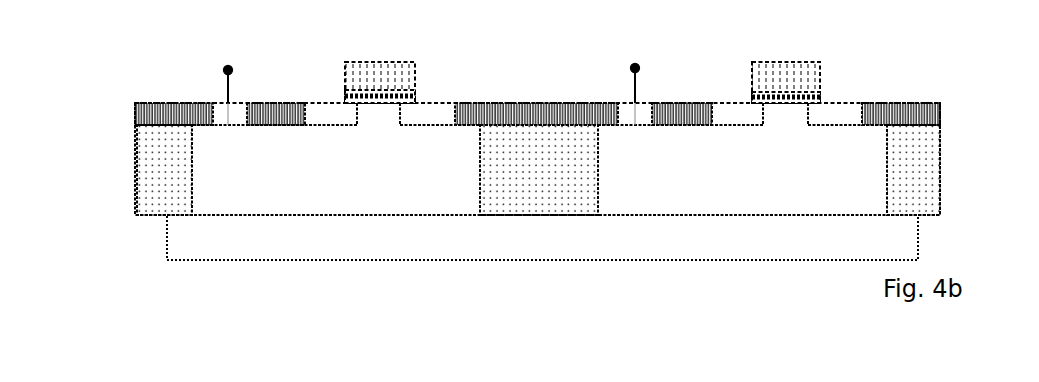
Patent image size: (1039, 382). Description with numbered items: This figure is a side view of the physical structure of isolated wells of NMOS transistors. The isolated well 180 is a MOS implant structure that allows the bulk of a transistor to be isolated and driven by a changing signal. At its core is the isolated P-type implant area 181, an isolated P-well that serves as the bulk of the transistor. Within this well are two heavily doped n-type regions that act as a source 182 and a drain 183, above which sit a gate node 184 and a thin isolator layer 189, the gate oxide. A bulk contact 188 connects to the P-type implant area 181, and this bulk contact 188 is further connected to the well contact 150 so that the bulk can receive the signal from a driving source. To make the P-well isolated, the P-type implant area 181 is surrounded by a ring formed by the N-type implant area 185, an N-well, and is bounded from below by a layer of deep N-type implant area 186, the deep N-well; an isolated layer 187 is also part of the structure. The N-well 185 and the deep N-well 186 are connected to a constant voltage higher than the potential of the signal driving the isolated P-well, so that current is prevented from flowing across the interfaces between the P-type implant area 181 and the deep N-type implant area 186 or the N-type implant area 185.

The well contact 150 is at (228, 70).
The isolated well 180 is at (1020, 39).
The isolated P-type implant area 181 is at (539, 159).
The source 182 is at (326, 102).
The drain 183 is at (430, 102).
The gate node 184 is at (379, 72).
The N-type implant area 185 is at (165, 198).
The deep N-type implant area 186 is at (542, 238).
The isolated layer 187 is at (916, 104).
The bulk contact 188 is at (220, 118).
The thin isolator layer 189 is at (809, 100).